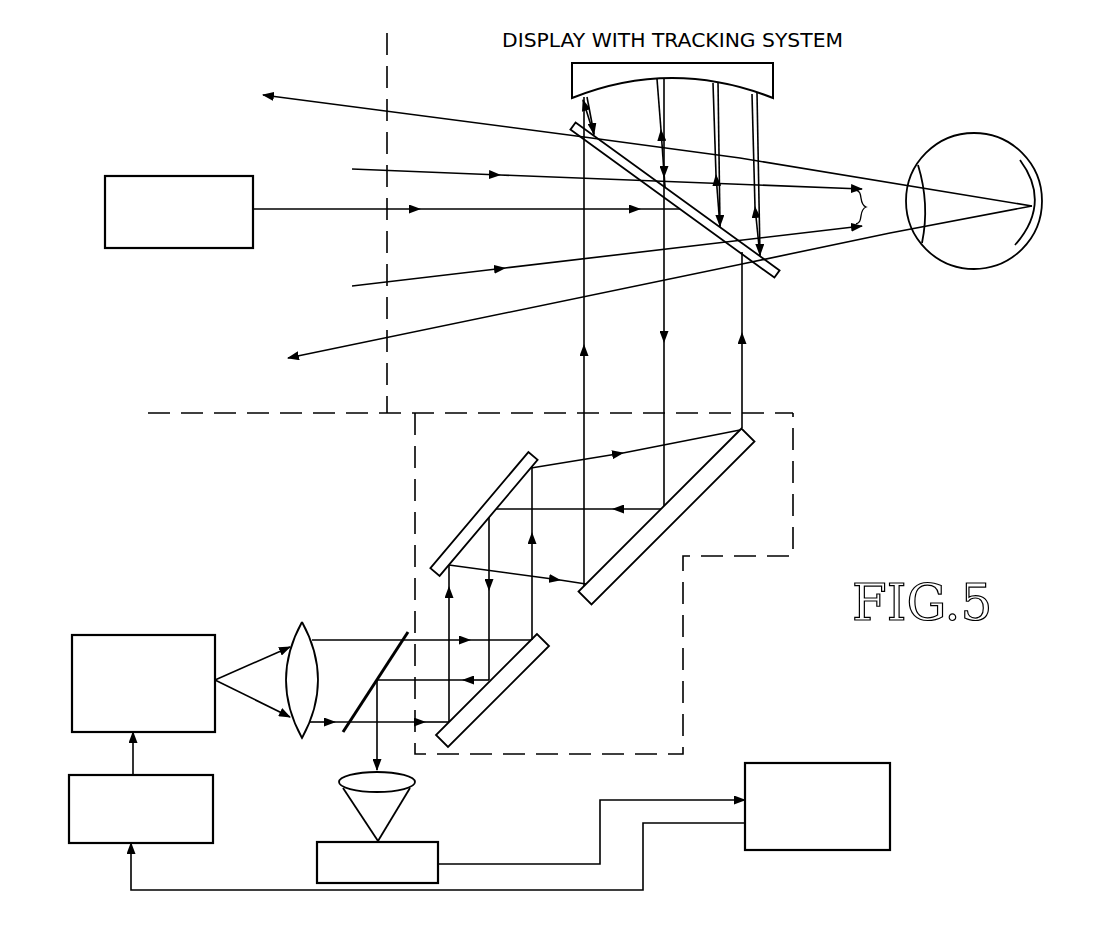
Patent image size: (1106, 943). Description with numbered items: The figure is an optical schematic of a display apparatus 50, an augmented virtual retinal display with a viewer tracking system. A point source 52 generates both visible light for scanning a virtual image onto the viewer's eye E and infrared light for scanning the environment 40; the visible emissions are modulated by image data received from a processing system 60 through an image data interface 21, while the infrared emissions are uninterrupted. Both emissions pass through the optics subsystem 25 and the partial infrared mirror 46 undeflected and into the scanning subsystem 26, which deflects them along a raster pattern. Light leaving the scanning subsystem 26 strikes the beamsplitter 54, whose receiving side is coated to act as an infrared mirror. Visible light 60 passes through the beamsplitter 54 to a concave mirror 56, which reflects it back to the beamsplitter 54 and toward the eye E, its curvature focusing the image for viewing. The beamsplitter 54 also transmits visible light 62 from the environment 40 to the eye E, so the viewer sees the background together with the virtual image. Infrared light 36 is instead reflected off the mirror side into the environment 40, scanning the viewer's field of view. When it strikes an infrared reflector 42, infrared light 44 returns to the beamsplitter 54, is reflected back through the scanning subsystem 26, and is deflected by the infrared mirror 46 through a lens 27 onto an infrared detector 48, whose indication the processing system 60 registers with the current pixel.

The environment 40 is at (155, 120).
The infrared reflector 42 is at (125, 176).
The infrared light 44 is at (322, 208).
The infrared light 36 is at (437, 117).
The visible light 62 is at (452, 174).
The concave mirror 56 is at (774, 82).
The visible light 60 is at (595, 120).
The beamsplitter 54 is at (777, 277).
The display apparatus 50 is at (965, 90).
The eye E is at (1005, 138).
The scanning subsystem 26 is at (793, 473).
The point source 52 is at (193, 634).
The optics subsystem 25 is at (303, 623).
The partial infrared mirror 46 is at (405, 633).
The image data interface 21 is at (213, 806).
The lens 27 is at (415, 787).
The infrared detector 48 is at (437, 842).